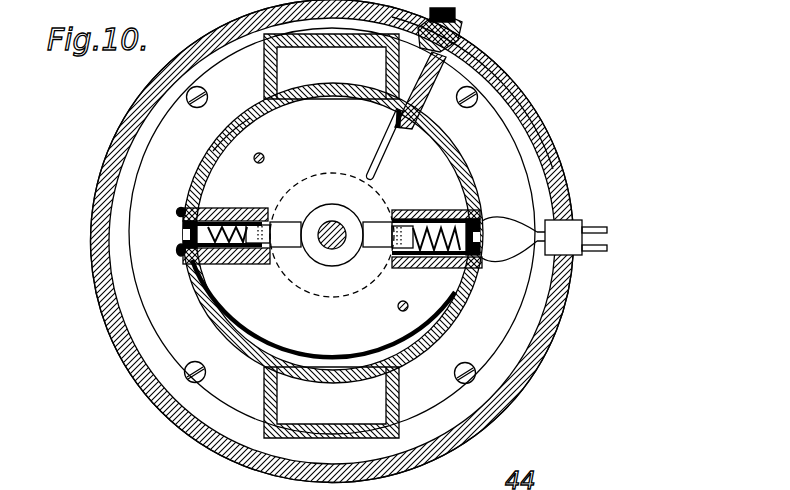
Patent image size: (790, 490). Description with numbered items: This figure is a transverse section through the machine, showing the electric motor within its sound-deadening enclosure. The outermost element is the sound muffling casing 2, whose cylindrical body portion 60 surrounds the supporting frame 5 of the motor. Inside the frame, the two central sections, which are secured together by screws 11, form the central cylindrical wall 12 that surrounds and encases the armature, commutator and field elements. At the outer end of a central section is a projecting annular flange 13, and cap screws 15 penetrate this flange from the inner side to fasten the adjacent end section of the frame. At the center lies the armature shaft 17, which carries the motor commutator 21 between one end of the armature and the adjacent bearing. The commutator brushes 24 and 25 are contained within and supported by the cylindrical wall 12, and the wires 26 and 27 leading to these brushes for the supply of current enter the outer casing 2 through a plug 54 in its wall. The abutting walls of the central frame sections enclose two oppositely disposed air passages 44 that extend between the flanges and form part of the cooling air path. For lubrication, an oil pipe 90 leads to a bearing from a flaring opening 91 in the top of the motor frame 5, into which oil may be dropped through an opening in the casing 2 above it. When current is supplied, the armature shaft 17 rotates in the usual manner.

The outer sound muffling casing 2 is at (540, 362).
The supporting frame 5 is at (527, 302).
The screws 11 is at (265, 156).
The central cylindrical wall 12 is at (201, 166).
The annular flange 13 is at (262, 128).
The cap screws 15 is at (479, 96).
The armature shaft 17 is at (324, 222).
The motor commutator 21 is at (343, 263).
The commutator brush 24 is at (276, 220).
The commutator brush 25 is at (378, 228).
The wire 26 is at (262, 332).
The wire 27 is at (498, 220).
The air passages 44 is at (331, 236).
The plug 54 is at (570, 227).
The cylindrical body portion 60 is at (110, 330).
The oil pipe 90 is at (383, 139).
The flaring opening 91 is at (420, 70).